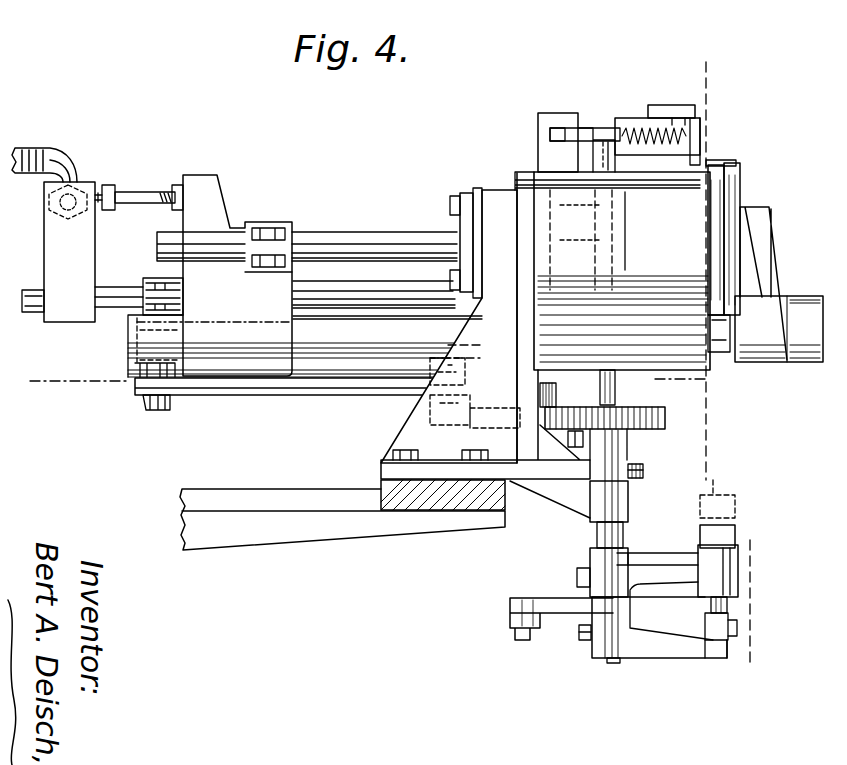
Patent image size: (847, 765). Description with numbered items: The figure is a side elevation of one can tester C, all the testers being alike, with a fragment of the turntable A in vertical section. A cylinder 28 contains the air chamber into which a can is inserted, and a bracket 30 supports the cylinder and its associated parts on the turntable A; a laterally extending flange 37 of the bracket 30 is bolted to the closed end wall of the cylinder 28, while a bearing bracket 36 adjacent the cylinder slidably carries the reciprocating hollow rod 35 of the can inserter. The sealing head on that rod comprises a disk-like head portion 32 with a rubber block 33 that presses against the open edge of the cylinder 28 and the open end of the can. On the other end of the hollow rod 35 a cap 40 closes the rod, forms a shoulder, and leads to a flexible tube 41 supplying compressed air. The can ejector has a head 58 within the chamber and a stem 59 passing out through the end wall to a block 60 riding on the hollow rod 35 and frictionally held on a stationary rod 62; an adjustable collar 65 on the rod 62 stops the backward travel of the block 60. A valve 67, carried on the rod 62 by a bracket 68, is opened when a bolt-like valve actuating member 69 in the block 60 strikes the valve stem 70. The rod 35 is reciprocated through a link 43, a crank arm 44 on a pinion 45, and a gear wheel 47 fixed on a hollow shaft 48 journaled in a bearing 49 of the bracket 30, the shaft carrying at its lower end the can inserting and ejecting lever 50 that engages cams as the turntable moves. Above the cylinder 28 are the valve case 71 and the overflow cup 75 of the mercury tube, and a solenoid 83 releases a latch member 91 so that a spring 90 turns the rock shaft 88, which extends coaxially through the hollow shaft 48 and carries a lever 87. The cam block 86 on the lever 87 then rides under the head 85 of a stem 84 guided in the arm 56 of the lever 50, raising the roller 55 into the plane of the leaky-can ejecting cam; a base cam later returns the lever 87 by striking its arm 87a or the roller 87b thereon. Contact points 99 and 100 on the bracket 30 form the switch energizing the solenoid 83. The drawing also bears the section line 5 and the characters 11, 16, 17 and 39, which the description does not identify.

The section line 5 is at (745, 53).
The axis center line 11 is at (367, 381).
The base plate 16 is at (437, 500).
The bed member 17 is at (342, 519).
The cylinder 28 is at (680, 208).
The bracket 30 is at (485, 345).
The disk-like head portion 32 is at (735, 200).
The rubber block 33 is at (718, 192).
The reciprocating hollow rod 35 is at (366, 352).
The bearing bracket 36 is at (702, 366).
The laterally extending flange 37 is at (517, 173).
The cone pulley 39 is at (777, 272).
The cap 40 is at (128, 352).
The flexible tube 41 is at (28, 147).
The link 43 is at (253, 393).
The crank arm 44 is at (475, 401).
The pinion 45 is at (556, 418).
The gear wheel 47 is at (667, 419).
The hollow shaft 48 is at (623, 536).
The bearing 49 is at (629, 496).
The can inserting and ejecting lever 50 is at (600, 558).
The roller 55 is at (735, 498).
The arm 56 is at (740, 586).
The head 58 is at (580, 236).
The stem 59 is at (337, 238).
The block 60 is at (249, 297).
The stationary rod 62 is at (360, 292).
The collar 65 is at (143, 279).
The valve 67 is at (79, 185).
The bracket 68 is at (82, 252).
The valve actuating member 69 is at (136, 191).
The valve stem 70 is at (100, 205).
The valve case 71 is at (680, 122).
The overflow cup 75 is at (676, 110).
The solenoid 83 is at (557, 113).
The stem 84 is at (728, 608).
The head 85 is at (738, 629).
The cam block 86 is at (730, 646).
The lever 87 is at (660, 654).
The arm 87a is at (579, 633).
The roller 87b is at (510, 625).
The rock shaft 88 is at (616, 390).
The spring 90 is at (640, 125).
The latch member 91 is at (600, 128).
The contact point 99 is at (636, 464).
The contact point 100 is at (645, 469).
The turntable A is at (182, 524).
The can tester C is at (479, 158).